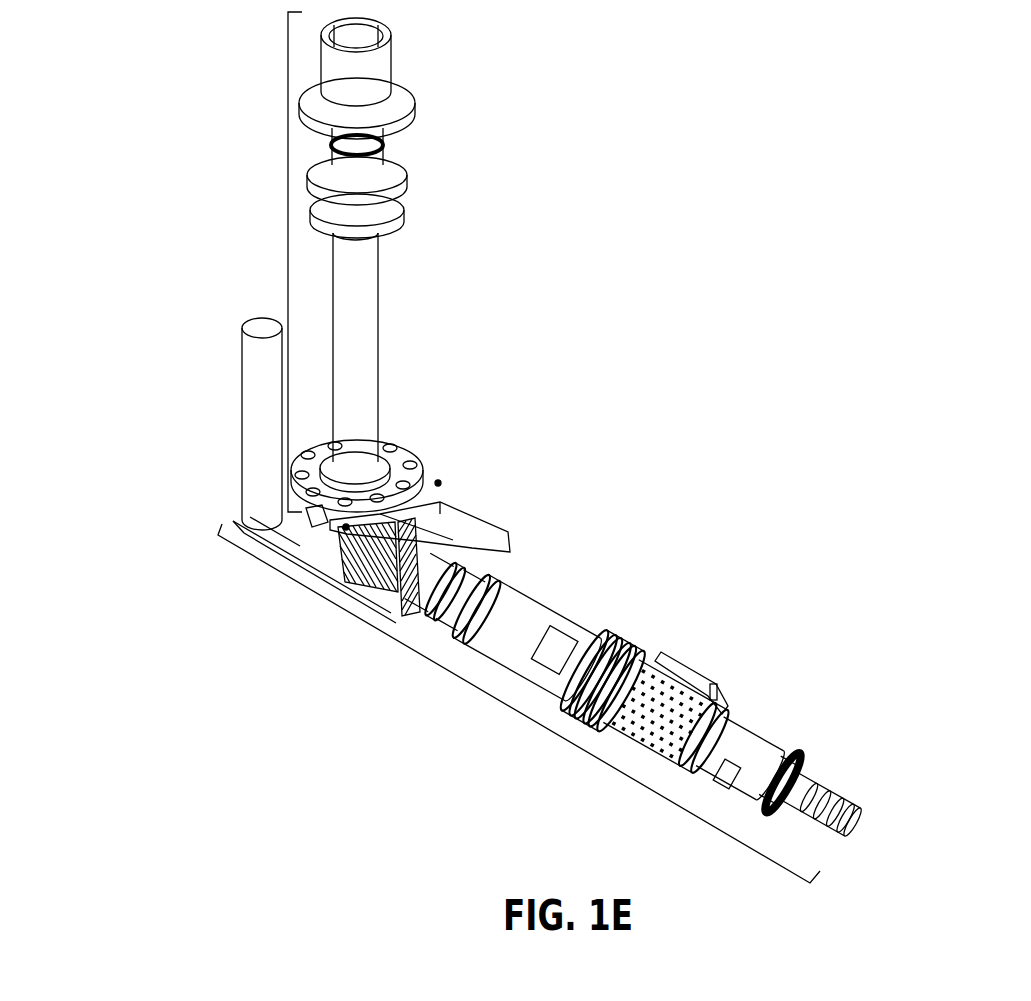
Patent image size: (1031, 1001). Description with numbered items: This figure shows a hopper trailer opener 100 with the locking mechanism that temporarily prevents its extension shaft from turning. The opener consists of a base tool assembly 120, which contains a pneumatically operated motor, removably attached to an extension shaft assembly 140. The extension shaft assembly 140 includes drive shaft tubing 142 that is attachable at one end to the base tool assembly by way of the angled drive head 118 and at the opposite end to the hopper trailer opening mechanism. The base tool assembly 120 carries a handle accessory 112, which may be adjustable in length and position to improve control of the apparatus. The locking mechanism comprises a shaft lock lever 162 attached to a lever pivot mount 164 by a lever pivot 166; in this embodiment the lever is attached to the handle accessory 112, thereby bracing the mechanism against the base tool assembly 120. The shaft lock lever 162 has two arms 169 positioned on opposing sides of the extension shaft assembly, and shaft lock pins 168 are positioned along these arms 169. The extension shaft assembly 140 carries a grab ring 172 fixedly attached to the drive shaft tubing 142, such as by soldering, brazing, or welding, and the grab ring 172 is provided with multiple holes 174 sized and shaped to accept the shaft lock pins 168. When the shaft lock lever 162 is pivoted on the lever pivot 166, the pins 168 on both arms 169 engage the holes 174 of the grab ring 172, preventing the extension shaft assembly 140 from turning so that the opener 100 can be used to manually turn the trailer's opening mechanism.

The hopper trailer opener 100 is at (886, 158).
The handle accessory 112 is at (258, 440).
The drive head 118 is at (332, 555).
The base tool assembly 120 is at (513, 713).
The extension shaft assembly 140 is at (288, 260).
The drive shaft tubing 142 is at (382, 302).
The shaft lock lever 162 is at (480, 531).
The lever pivot mount 164 is at (406, 559).
The lever pivot 166 is at (379, 559).
The shaft lock pins 168 is at (315, 515).
The arms 169 is at (350, 526).
The grab ring 172 is at (411, 441).
The holes 174 is at (419, 461).